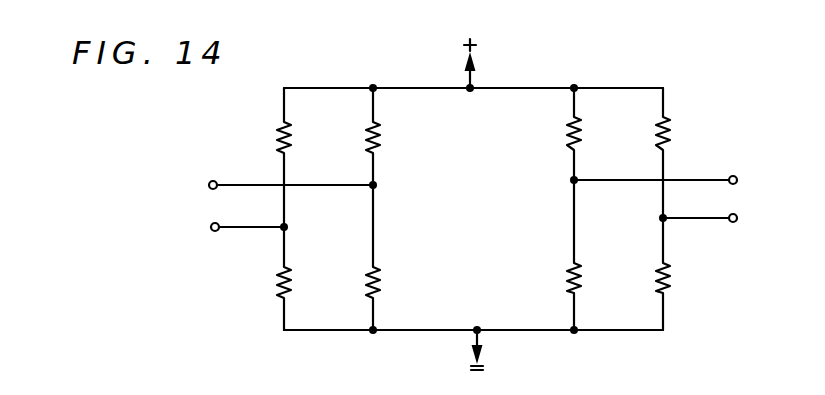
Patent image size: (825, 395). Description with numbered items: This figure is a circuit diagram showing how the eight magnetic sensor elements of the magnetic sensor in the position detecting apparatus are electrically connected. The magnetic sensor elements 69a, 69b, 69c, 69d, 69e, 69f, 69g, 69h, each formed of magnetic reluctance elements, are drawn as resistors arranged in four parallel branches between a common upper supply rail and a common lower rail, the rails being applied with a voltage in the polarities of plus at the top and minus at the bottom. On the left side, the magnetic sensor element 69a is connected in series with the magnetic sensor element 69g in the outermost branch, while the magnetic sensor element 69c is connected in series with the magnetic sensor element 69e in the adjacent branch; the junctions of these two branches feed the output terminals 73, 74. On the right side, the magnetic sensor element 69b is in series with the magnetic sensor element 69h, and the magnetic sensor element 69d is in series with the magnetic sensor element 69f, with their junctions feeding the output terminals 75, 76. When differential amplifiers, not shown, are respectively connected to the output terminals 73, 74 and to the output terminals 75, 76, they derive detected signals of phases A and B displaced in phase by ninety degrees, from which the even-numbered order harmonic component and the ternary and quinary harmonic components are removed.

The magnetic sensor element 69a is at (291, 138).
The magnetic sensor element 69b is at (567, 136).
The magnetic sensor element 69c is at (380, 138).
The magnetic sensor element 69d is at (670, 128).
The magnetic sensor element 69e is at (380, 283).
The magnetic sensor element 69f is at (670, 280).
The magnetic sensor element 69g is at (291, 283).
The magnetic sensor element 69h is at (567, 282).
The output terminal 73 is at (210, 183).
The output terminal 74 is at (210, 228).
The output terminal 75 is at (737, 177).
The output terminal 76 is at (737, 221).